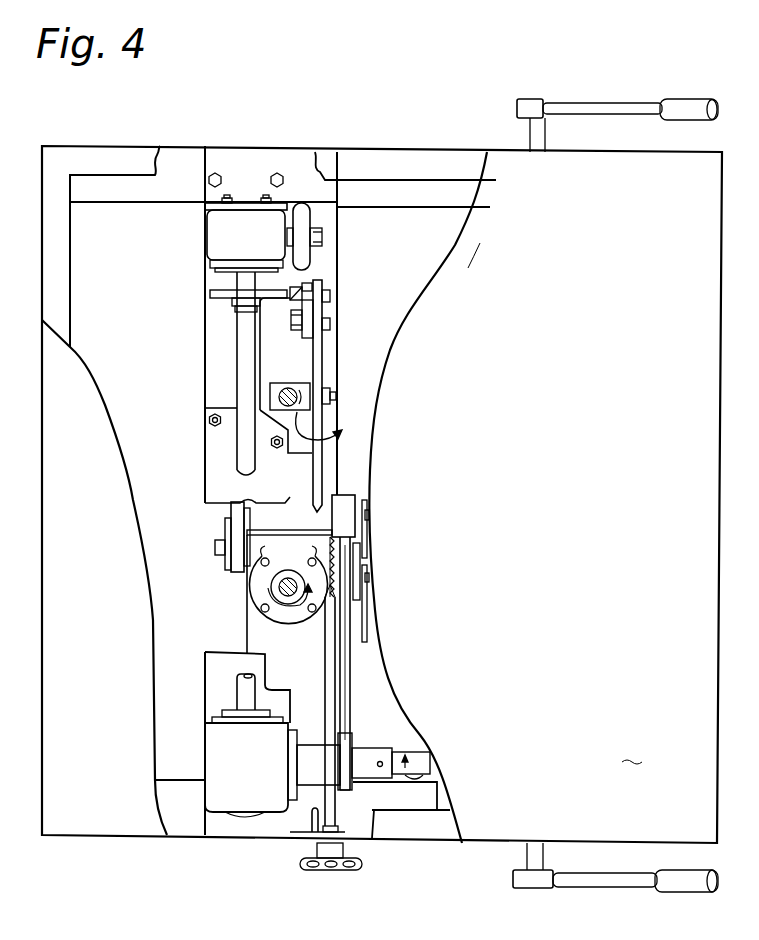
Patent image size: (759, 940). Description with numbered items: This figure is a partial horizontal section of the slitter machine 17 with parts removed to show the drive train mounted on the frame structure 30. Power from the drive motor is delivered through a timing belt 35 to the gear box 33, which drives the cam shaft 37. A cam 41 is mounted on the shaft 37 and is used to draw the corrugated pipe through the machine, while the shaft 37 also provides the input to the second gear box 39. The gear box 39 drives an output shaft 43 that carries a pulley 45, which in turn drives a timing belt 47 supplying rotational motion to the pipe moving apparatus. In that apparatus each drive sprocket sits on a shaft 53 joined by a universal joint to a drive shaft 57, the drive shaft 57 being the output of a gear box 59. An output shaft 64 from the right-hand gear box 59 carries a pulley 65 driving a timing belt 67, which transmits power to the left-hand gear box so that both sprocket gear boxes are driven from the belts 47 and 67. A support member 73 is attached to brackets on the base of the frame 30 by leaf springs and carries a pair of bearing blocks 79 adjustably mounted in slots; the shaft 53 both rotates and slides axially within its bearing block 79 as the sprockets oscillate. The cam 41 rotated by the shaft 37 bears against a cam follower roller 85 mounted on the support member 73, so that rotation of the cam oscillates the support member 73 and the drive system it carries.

The slitter machine 17 is at (222, 125).
The frame structure 30 is at (382, 495).
The gear box 33 is at (228, 233).
The timing belt 35 is at (300, 224).
The cam shaft 37 is at (245, 368).
The second gear box 39 is at (256, 778).
The cam 41 is at (218, 297).
The output shaft 43 is at (425, 755).
The pulley 45 is at (355, 730).
The timing belt 47 is at (348, 665).
The shaft 53 is at (292, 392).
The drive shaft 57 is at (272, 600).
The gear box 59 is at (258, 590).
The output shaft 64 is at (217, 550).
The pulley 65 is at (229, 530).
The timing belt 67 is at (232, 510).
The support member 73 is at (322, 302).
The bearing block 79 is at (330, 427).
The cam follower roller 85 is at (300, 290).